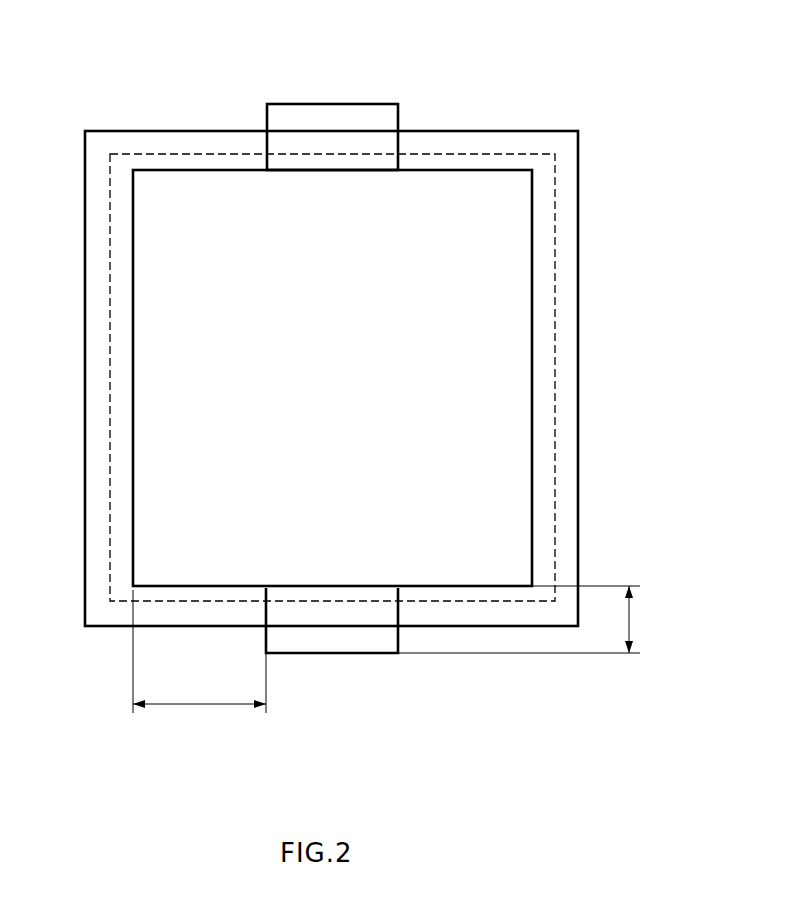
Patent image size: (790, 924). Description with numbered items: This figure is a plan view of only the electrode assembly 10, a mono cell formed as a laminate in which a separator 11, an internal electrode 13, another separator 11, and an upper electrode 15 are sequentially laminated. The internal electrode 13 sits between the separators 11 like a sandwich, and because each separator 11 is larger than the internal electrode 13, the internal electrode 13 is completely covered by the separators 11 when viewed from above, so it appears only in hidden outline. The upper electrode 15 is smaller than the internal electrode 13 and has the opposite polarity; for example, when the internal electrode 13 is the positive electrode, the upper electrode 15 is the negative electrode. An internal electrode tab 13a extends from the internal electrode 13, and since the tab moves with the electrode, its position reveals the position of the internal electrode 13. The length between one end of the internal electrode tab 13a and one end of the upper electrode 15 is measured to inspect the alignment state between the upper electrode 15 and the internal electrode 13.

The electrode assembly 10 is at (441, 95).
The separator 11 is at (578, 181).
The internal electrode 13 is at (493, 600).
The internal electrode tab 13a is at (343, 640).
The upper electrode 15 is at (532, 338).